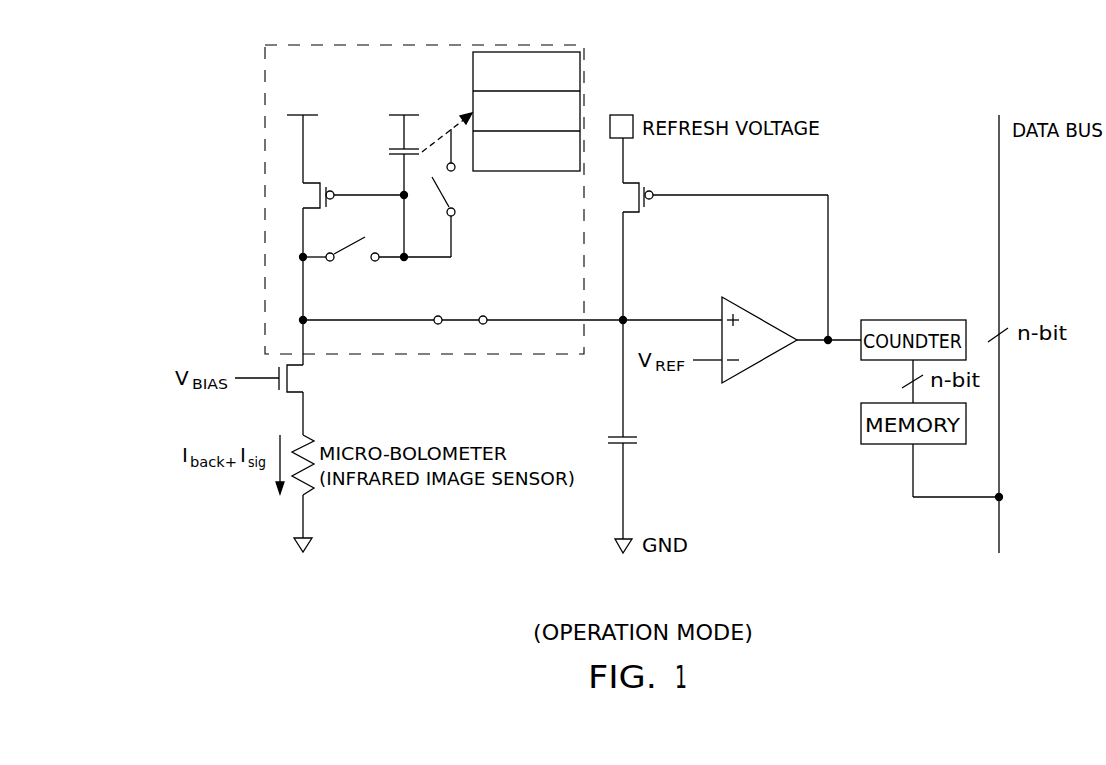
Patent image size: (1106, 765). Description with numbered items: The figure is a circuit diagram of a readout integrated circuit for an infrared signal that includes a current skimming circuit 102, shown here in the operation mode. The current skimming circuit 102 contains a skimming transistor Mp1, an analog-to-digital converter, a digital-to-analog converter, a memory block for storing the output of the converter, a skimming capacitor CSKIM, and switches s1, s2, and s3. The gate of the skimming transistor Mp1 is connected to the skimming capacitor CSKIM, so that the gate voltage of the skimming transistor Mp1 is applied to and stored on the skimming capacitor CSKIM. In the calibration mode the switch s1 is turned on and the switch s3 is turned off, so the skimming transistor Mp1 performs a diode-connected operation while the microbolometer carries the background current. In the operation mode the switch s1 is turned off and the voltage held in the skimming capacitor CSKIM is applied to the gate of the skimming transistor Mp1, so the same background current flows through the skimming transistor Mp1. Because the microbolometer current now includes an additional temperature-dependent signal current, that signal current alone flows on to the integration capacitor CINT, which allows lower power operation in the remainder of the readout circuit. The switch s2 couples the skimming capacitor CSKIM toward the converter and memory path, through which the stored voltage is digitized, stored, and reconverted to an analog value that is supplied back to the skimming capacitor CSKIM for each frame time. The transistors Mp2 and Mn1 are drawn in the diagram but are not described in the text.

The current skimming circuit 102 is at (493, 192).
The skimming transistor Mp1 is at (339, 197).
The second PMOS transistor Mp2 is at (709, 197).
The NMOS bias transistor Mn1 is at (284, 380).
The skimming capacitor CSKIM is at (381, 186).
The integration capacitor CINT is at (599, 428).
The switch s1 is at (376, 264).
The switch s2 is at (460, 193).
The switch s3 is at (511, 335).